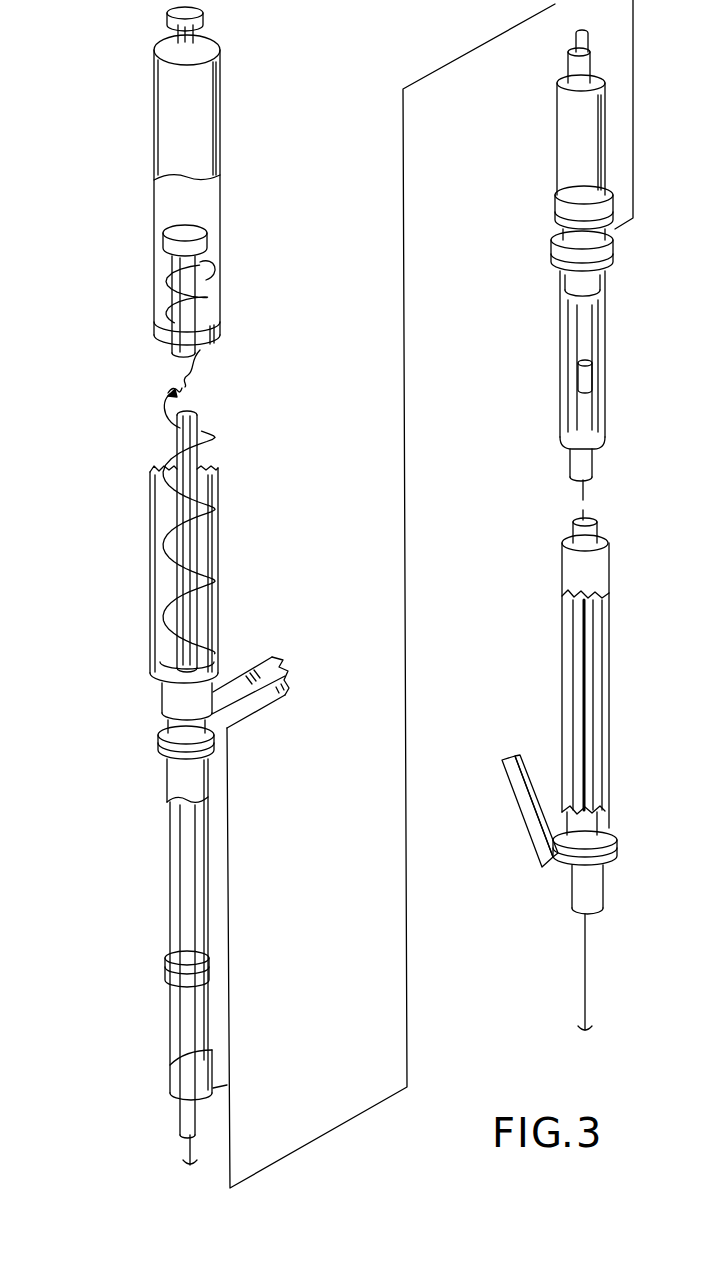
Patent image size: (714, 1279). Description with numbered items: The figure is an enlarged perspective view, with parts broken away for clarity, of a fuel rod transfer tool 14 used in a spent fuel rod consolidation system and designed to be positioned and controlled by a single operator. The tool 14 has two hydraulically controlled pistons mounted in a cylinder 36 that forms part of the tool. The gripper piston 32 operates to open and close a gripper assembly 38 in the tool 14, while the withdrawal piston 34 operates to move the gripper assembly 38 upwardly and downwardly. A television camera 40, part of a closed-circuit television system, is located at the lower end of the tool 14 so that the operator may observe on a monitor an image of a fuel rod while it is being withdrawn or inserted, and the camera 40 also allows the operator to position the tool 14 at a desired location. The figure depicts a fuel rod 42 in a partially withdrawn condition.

The fuel rod transfer tool 14 is at (121, 200).
The gripper piston 32 is at (207, 235).
The withdrawal piston 34 is at (166, 975).
The cylinder 36 is at (152, 527).
The gripper assembly 38 is at (606, 397).
The television camera 40 is at (507, 793).
The fuel rod 42 is at (587, 737).